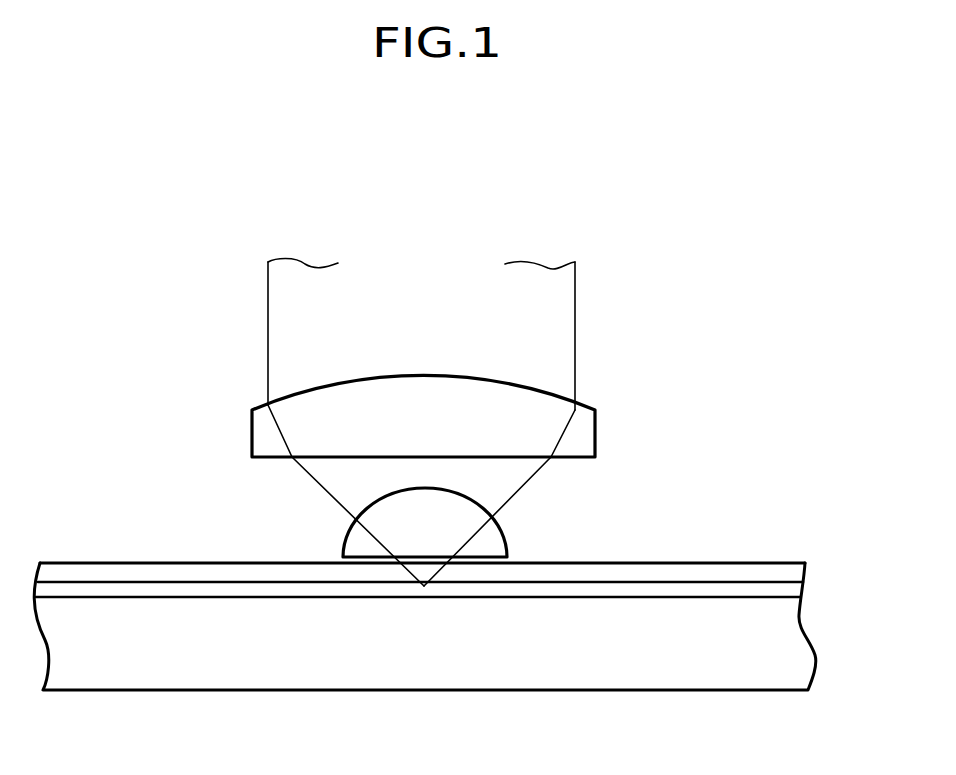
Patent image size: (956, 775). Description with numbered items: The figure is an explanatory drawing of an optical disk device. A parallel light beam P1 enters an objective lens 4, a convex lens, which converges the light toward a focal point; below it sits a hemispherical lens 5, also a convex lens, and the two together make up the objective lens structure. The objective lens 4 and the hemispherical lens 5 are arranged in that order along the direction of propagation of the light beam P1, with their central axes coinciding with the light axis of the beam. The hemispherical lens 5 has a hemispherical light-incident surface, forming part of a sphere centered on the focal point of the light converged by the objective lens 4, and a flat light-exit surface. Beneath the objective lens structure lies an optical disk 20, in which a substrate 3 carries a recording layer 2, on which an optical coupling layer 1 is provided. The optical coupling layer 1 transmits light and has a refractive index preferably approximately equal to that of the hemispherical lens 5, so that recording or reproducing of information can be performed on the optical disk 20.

The parallel light beam P1 is at (283, 340).
The objective lens 4 is at (528, 408).
The hemispherical lens 5 is at (422, 503).
The optical coupling layer 1 is at (655, 573).
The recording layer 2 is at (690, 590).
The substrate 3 is at (753, 615).
The optical disk 20 is at (827, 563).